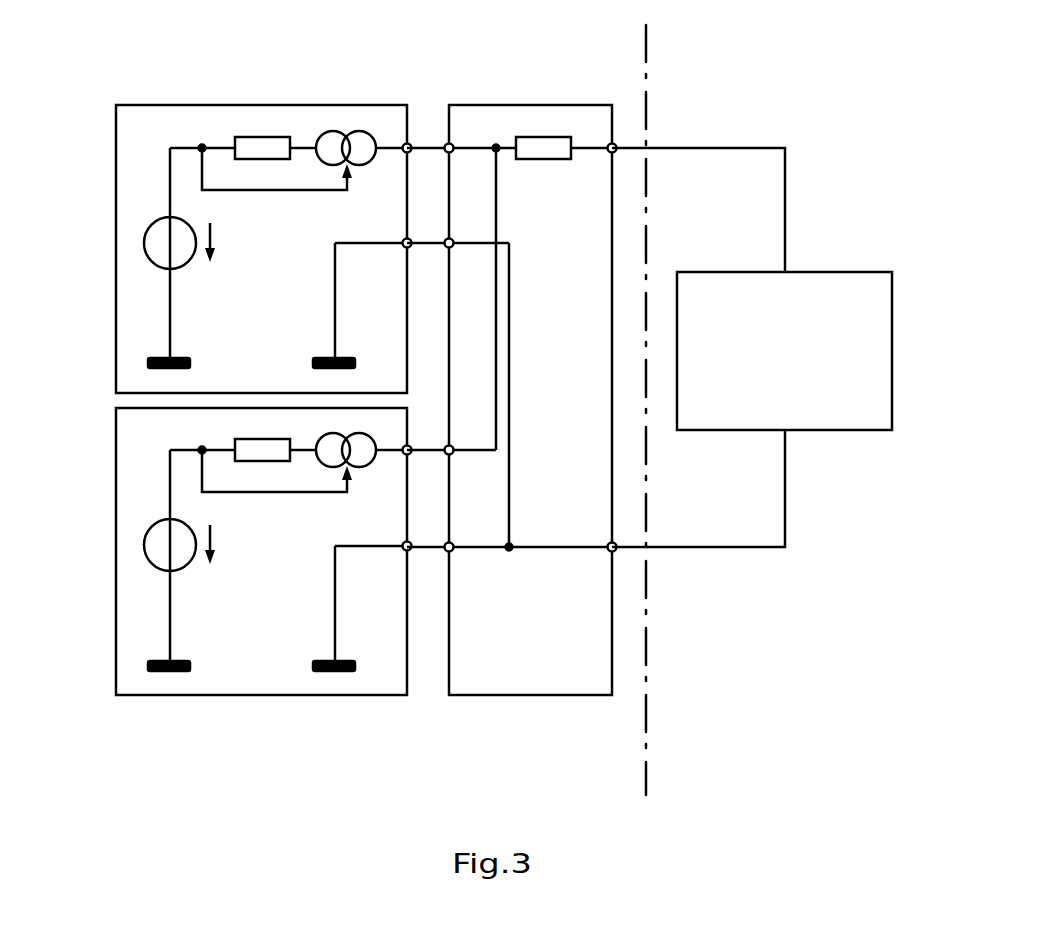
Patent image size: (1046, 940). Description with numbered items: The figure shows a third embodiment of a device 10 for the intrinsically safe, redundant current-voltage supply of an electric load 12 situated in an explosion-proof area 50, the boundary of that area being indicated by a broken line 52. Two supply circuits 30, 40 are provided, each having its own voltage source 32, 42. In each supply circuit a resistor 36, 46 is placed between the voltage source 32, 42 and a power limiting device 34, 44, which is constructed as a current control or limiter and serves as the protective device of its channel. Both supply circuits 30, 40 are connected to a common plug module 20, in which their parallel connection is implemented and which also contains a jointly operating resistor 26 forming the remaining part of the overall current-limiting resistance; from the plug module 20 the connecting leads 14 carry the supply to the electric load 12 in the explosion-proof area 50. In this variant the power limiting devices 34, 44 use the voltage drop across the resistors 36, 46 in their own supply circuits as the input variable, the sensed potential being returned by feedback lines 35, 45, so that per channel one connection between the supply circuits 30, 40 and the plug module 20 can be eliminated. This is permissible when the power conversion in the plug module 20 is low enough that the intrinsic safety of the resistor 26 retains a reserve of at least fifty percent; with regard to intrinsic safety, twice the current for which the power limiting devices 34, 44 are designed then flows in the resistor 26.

The device 10 is at (89, 101).
The electric load 12 is at (797, 366).
The connecting leads 14 is at (785, 185).
The plug module 20 is at (543, 634).
The resistor 26 is at (545, 137).
The supply circuit 30 is at (210, 105).
The voltage source 32 is at (178, 265).
The power limiting device 34 is at (320, 133).
The feedback line 35 is at (290, 190).
The resistor 36 is at (262, 137).
The supply circuit 40 is at (252, 695).
The voltage source 42 is at (178, 567).
The power limiting device 44 is at (372, 466).
The feedback line 45 is at (290, 492).
The resistor 46 is at (258, 461).
The explosion-proof area 50 is at (808, 114).
The broken line 52 is at (646, 645).